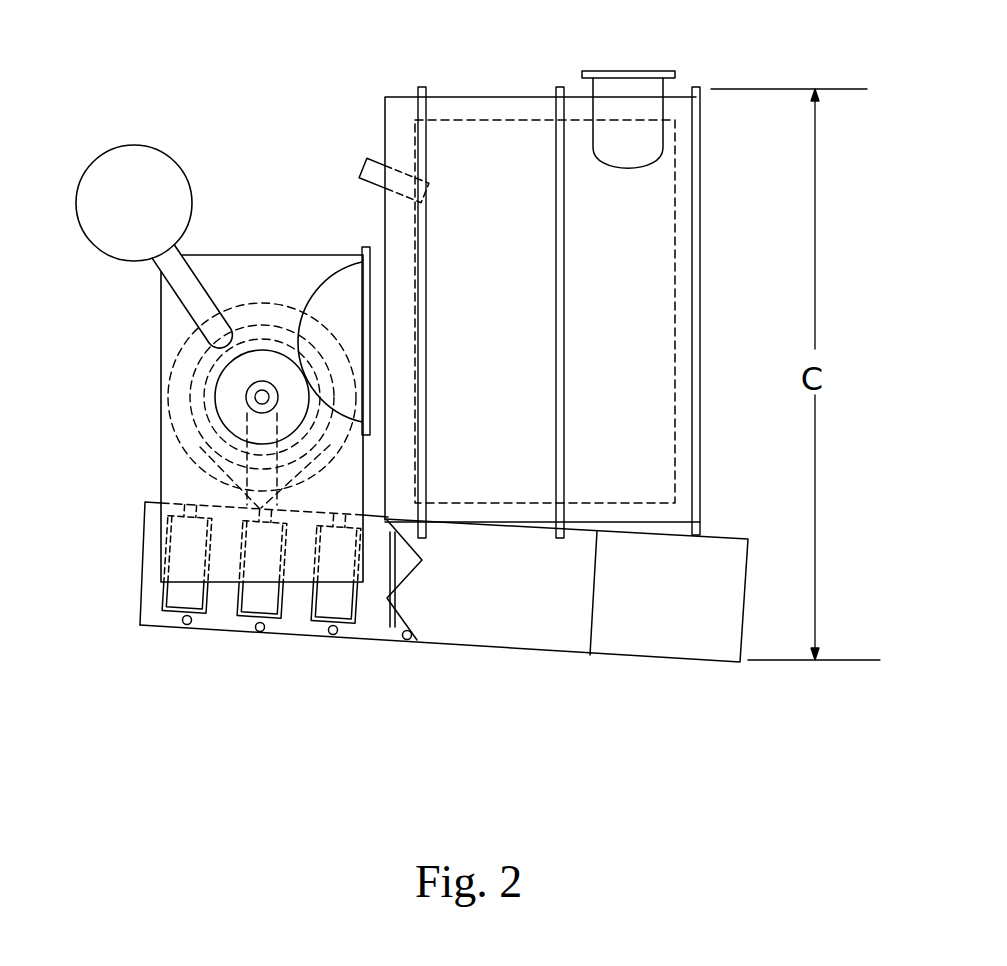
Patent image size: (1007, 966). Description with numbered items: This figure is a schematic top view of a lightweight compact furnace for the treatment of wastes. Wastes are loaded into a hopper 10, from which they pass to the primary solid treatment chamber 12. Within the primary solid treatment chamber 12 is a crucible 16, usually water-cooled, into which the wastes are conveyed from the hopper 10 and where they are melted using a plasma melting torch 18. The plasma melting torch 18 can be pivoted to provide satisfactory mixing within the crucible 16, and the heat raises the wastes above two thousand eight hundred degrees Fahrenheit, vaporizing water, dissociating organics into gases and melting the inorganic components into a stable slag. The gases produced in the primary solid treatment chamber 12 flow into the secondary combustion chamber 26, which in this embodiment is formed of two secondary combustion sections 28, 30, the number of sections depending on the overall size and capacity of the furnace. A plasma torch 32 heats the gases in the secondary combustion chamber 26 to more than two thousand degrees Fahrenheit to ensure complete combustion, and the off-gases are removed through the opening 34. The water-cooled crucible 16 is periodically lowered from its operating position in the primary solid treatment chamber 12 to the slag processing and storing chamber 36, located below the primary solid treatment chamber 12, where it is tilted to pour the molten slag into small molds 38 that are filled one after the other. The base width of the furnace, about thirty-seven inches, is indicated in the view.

The hopper 10 is at (170, 178).
The primary solid treatment chamber 12 is at (158, 315).
The crucible 16 is at (182, 403).
The plasma melting torch 18 is at (262, 397).
The secondary combustion chamber 26 is at (473, 97).
The secondary combustion section 28 is at (445, 143).
The secondary combustion section 30 is at (650, 213).
The plasma torch 32 is at (372, 170).
The opening 34 is at (650, 85).
The slag processing and storing chamber 36 is at (140, 575).
The small molds 38 is at (393, 625).